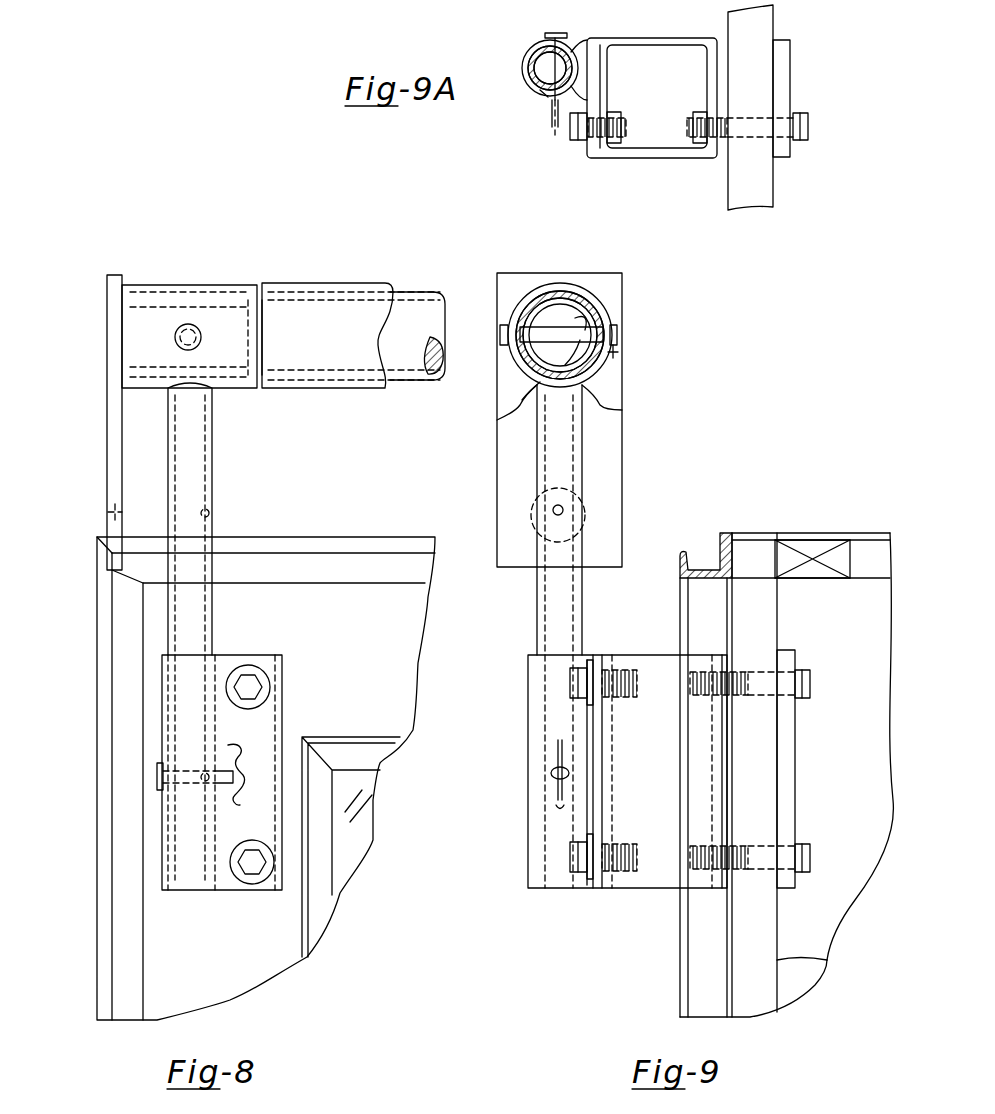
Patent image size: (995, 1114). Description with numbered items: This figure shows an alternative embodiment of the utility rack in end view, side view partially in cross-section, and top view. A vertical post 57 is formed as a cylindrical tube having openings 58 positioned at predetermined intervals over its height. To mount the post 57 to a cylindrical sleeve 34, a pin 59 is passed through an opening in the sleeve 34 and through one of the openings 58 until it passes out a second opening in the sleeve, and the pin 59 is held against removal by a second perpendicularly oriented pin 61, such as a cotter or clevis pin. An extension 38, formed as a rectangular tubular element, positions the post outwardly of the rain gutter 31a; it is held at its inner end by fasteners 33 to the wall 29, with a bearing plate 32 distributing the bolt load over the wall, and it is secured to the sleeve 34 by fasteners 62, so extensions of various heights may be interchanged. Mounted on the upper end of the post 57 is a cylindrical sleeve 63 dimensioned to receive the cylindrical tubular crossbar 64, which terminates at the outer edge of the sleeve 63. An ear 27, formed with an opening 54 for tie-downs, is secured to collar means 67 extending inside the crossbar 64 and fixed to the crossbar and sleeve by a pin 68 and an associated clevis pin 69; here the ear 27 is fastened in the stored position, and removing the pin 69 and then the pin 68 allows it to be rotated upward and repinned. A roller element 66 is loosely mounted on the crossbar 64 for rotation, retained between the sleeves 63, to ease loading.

In FIG. 8, the ear 27 is at (107, 455).
In FIG. 9, the ear 27 is at (622, 455).
In FIG. 9, the wall 29 is at (752, 620).
In FIG. 9A, the wall 29 is at (750, 185).
In FIG. 9, the rain gutter 31a is at (705, 540).
In FIG. 9, the bearing plate 32 is at (835, 550).
In FIG. 9, the fasteners 33 is at (810, 682).
In FIG. 9A, the fasteners 33 is at (697, 148).
In FIG. 8, the cylindrical sleeve 34 is at (215, 890).
In FIG. 9A, the cylindrical sleeve 34 is at (530, 55).
In FIG. 9, the extension 38 is at (655, 882).
In FIG. 8, the openings 54 is at (110, 512).
In FIG. 9, the openings 54 is at (585, 535).
In FIG. 8, the vertical post 57 is at (212, 458).
In FIG. 9, the vertical post 57 is at (582, 600).
In FIG. 9A, the vertical post 57 is at (540, 88).
In FIG. 8, the openings 58 is at (210, 517).
In FIG. 9, the openings 58 is at (563, 510).
In FIG. 8, the pin 59 is at (157, 777).
In FIG. 9, the pin 59 is at (552, 771).
In FIG. 9A, the pin 59 is at (560, 42).
In FIG. 8, the second pin 61 is at (233, 806).
In FIG. 9, the second pin 61 is at (556, 790).
In FIG. 9A, the second pin 61 is at (555, 112).
In FIG. 8, the fasteners 62 is at (258, 680).
In FIG. 9, the fasteners 62 is at (570, 683).
In FIG. 9A, the fasteners 62 is at (575, 140).
In FIG. 8, the cylindrical sleeve 63 is at (250, 388).
In FIG. 9, the cylindrical sleeve 63 is at (605, 400).
In FIG. 8, the cylindrical tubular crossbar 64 is at (150, 290).
In FIG. 9, the cylindrical tubular crossbar 64 is at (497, 420).
In FIG. 8, the roller element 66 is at (340, 388).
In FIG. 8, the collar means 67 is at (190, 300).
In FIG. 9, the collar means 67 is at (570, 312).
In FIG. 8, the pin 68 is at (200, 332).
In FIG. 9, the pin 68 is at (585, 372).
In FIG. 9, the clevis pin 69 is at (617, 330).